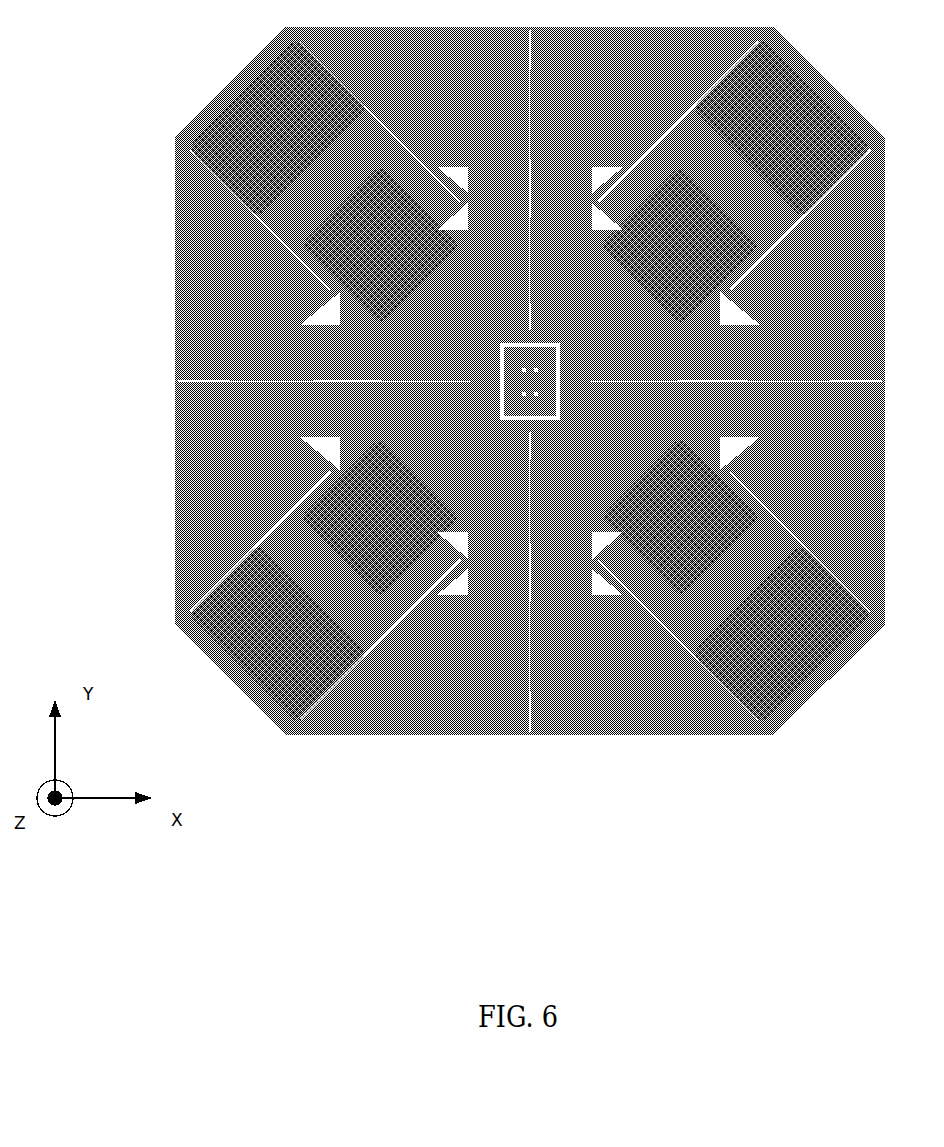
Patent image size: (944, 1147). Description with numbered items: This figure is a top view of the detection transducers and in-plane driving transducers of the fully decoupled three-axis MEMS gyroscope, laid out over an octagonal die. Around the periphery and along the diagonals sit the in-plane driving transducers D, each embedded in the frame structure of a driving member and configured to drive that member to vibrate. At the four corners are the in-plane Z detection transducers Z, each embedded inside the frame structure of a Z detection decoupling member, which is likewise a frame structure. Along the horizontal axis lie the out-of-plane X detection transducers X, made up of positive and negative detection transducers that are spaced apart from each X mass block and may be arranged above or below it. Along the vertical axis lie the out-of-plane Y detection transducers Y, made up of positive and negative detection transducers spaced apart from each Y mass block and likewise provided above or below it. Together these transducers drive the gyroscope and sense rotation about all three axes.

The out-of-plane X detection transducer X is at (530, 383).
The out-of-plane Y detection transducer Y is at (532, 381).
The in-plane Z detection transducer Z is at (529, 380).
The in-plane driving transducer D is at (530, 381).